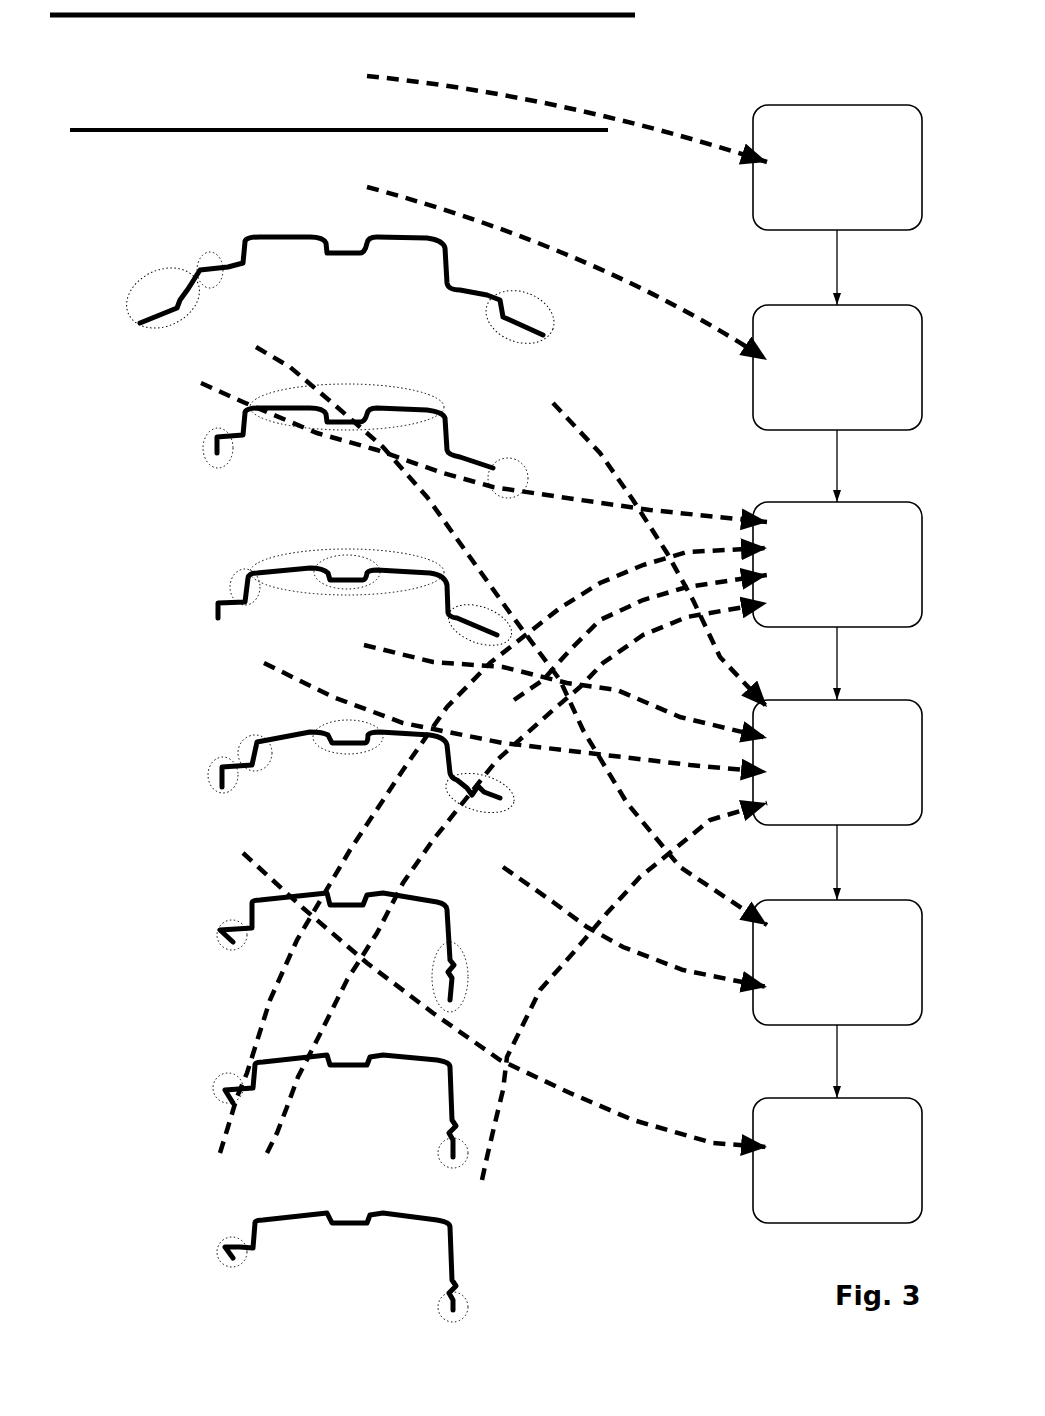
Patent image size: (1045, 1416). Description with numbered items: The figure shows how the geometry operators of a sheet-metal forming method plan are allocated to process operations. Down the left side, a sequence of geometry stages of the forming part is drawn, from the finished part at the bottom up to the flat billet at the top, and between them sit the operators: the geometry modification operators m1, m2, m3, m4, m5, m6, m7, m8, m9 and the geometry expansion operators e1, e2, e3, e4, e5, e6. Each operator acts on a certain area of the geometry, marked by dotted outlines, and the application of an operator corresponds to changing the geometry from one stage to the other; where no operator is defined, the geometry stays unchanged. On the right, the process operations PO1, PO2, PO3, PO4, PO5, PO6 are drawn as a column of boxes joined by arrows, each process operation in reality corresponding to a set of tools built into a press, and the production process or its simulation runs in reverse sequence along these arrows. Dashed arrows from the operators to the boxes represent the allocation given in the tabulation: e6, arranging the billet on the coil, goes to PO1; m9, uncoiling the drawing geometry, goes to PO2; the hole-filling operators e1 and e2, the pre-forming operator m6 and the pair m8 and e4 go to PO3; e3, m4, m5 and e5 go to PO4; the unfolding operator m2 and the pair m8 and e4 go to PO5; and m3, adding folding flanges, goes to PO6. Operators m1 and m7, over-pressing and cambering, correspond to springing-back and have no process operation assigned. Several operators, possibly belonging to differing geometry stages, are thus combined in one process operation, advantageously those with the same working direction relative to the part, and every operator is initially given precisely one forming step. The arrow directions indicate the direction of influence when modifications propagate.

The process operation PO1 is at (837, 167).
The process operation PO2 is at (837, 367).
The process operation PO3 is at (837, 564).
The process operation PO4 is at (837, 762).
The process operation PO5 is at (837, 962).
The process operation PO6 is at (837, 1160).
The geometry expansion operator e1 is at (222, 1107).
The geometry expansion operator e2 is at (242, 1095).
The geometry expansion operator e3 is at (463, 1298).
The geometry expansion operator e4 is at (175, 320).
The geometry expansion operator e5 is at (528, 335).
The geometry expansion operator e6 is at (343, 32).
The geometry modification operator m1 is at (230, 1078).
The geometry modification operator m2 is at (465, 962).
The geometry modification operator m3 is at (222, 787).
The geometry modification operator m4 is at (250, 740).
The geometry modification operator m5 is at (347, 722).
The geometry modification operator m6 is at (484, 640).
The geometry modification operator m7 is at (346, 423).
The geometry modification operator m8 is at (222, 433).
The geometry modification operator m9 is at (343, 143).